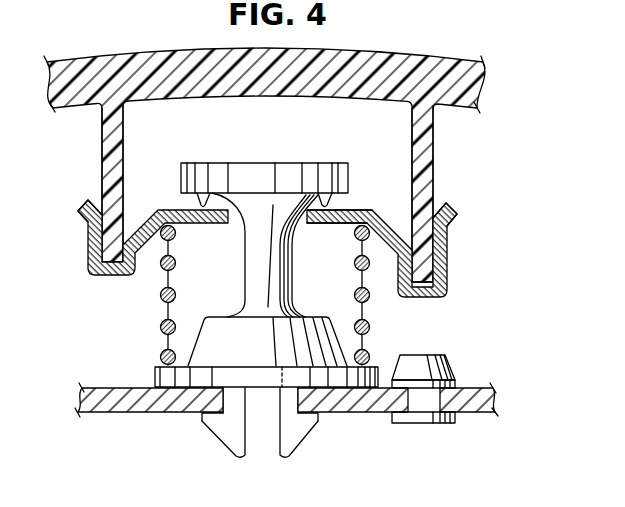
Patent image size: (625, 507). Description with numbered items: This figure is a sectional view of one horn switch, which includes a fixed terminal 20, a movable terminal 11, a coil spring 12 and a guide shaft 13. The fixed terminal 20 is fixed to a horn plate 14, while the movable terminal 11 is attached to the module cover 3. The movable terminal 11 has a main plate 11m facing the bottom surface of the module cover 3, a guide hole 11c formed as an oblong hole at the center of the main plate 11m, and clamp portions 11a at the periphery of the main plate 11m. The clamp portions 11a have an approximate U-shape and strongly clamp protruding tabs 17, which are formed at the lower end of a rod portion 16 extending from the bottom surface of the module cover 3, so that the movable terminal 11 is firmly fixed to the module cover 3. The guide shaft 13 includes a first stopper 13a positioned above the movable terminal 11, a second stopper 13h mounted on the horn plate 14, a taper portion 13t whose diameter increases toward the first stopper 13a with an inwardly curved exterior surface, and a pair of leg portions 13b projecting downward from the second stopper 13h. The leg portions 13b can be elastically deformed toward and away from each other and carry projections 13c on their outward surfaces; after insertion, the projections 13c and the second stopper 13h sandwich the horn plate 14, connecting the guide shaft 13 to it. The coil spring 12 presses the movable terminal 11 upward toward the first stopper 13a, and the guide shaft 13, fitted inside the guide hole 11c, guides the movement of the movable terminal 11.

The module cover 3 is at (483, 88).
The movable terminal 11 is at (270, 235).
The clamp portions 11a is at (88, 255).
The guide hole 11c is at (307, 227).
The main plate 11m is at (367, 209).
The coil spring 12 is at (372, 327).
The guide shaft 13 is at (239, 295).
The first stopper 13a is at (313, 165).
The leg portions 13b is at (230, 457).
The projections 13c is at (204, 418).
The second stopper 13h is at (157, 372).
The taper portion 13t is at (240, 197).
The horn plate 14 is at (480, 413).
The rod portion 16 is at (433, 160).
The protruding tabs 17 is at (125, 148).
The fixed terminal 20 is at (455, 367).